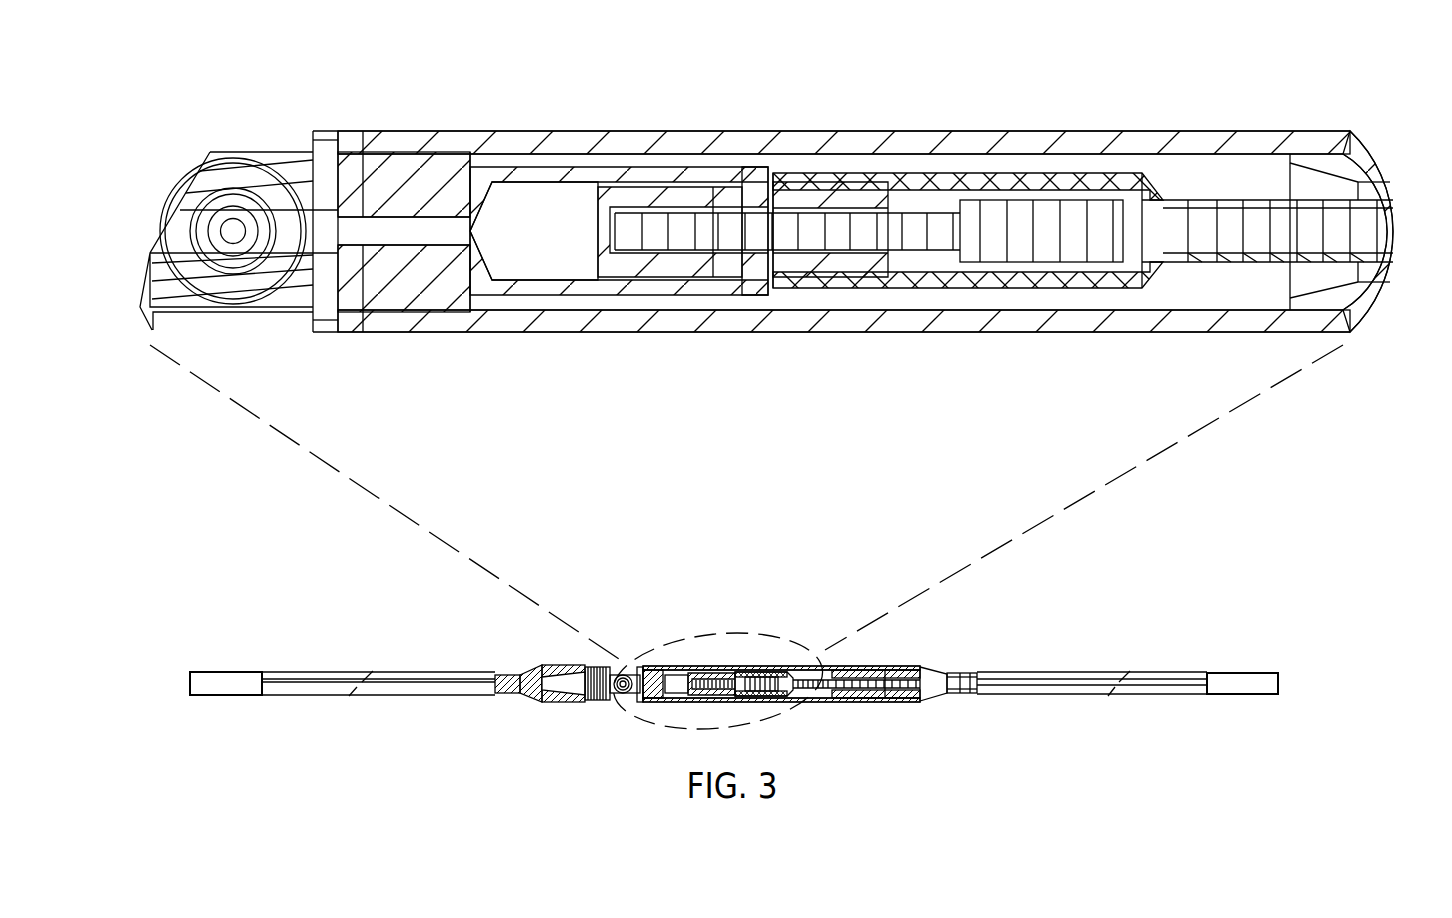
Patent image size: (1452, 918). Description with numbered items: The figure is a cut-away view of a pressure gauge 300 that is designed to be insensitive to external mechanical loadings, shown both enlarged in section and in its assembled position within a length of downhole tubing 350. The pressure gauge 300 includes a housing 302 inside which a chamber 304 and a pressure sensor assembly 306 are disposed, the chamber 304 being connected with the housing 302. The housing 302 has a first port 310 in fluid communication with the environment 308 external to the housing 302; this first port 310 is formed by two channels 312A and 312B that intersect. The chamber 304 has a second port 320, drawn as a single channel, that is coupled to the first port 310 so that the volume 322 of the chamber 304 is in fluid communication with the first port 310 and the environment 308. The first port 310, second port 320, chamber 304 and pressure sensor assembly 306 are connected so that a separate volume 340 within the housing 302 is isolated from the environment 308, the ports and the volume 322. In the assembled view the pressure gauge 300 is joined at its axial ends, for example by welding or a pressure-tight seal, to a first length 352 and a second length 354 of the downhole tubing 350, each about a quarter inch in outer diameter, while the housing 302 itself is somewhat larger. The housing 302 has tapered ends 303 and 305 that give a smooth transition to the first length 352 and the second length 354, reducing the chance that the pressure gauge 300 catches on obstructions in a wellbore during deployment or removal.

The pressure gauge 300 is at (491, 627).
The housing 302 is at (905, 131).
The tapered end 303 is at (533, 700).
The chamber 304 is at (606, 165).
The tapered end 305 is at (937, 663).
The pressure sensor assembly 306 is at (1018, 272).
The environment 308 is at (334, 396).
The first port 310 is at (233, 208).
The channel 312A is at (217, 222).
The channel 312B is at (272, 193).
The second port 320 is at (386, 215).
The volume 322 is at (534, 217).
The volume 340 is at (1221, 186).
The downhole tubing 350 is at (248, 534).
The first length 352 is at (290, 670).
The second length 354 is at (1152, 672).